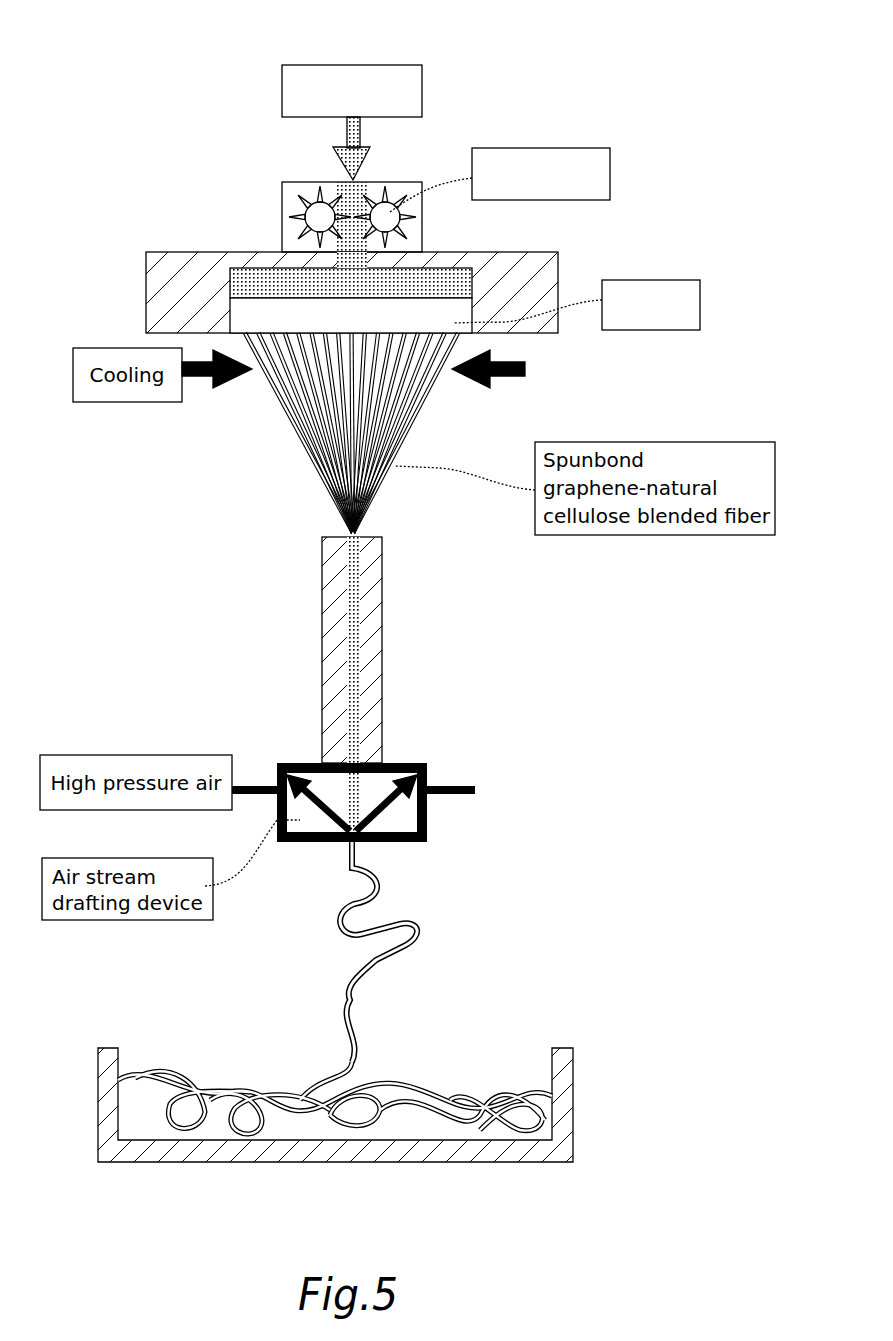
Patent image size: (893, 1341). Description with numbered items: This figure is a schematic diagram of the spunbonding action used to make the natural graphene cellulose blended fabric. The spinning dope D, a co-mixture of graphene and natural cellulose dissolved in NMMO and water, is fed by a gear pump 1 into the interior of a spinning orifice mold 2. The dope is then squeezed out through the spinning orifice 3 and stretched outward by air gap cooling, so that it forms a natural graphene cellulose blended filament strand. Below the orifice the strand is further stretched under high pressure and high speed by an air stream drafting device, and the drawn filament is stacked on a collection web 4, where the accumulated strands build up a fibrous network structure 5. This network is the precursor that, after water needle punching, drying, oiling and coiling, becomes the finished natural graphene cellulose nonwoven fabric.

The dope D is at (355, 65).
The gear pump 1 is at (610, 172).
The spinning orifice mold 2 is at (162, 272).
The spinning orifice 3 is at (700, 318).
The collection web 4 is at (565, 1112).
The fibrous network structure 5 is at (360, 1125).